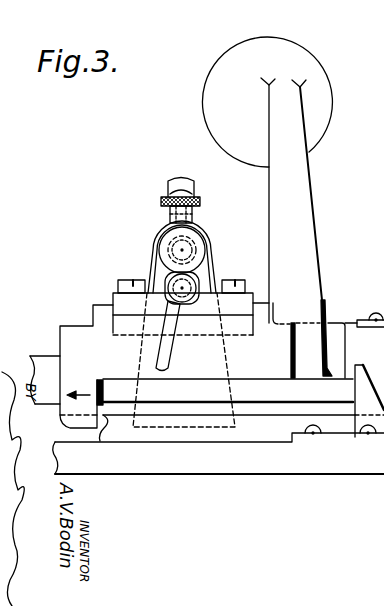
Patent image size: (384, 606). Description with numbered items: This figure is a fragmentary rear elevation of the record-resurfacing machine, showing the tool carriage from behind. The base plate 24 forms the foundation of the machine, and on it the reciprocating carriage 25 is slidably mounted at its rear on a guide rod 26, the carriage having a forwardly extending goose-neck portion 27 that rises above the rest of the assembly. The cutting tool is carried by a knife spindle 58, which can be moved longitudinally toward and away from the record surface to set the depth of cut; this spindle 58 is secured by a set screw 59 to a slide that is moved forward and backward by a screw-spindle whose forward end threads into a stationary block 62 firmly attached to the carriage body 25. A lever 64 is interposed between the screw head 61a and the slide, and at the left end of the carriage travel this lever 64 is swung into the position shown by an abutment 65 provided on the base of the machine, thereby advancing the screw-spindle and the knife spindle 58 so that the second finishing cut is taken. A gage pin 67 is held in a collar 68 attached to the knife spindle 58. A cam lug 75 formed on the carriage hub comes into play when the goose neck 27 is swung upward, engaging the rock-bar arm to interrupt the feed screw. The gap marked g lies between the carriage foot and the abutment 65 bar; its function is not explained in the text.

The base plate 24 is at (187, 471).
The carriage 25 is at (78, 330).
The guide rod 26 is at (43, 368).
The goose-neck portion 27 is at (300, 187).
The spindle 58 is at (205, 247).
The set screw 59 is at (201, 203).
The screw head 61a is at (200, 278).
The stationary block 62 is at (245, 302).
The lever 64 is at (170, 350).
The abutment 65 is at (361, 388).
The gage pin 67 is at (167, 191).
The collar 68 is at (190, 192).
The cam lug 75 is at (66, 423).
The gap g is at (78, 382).